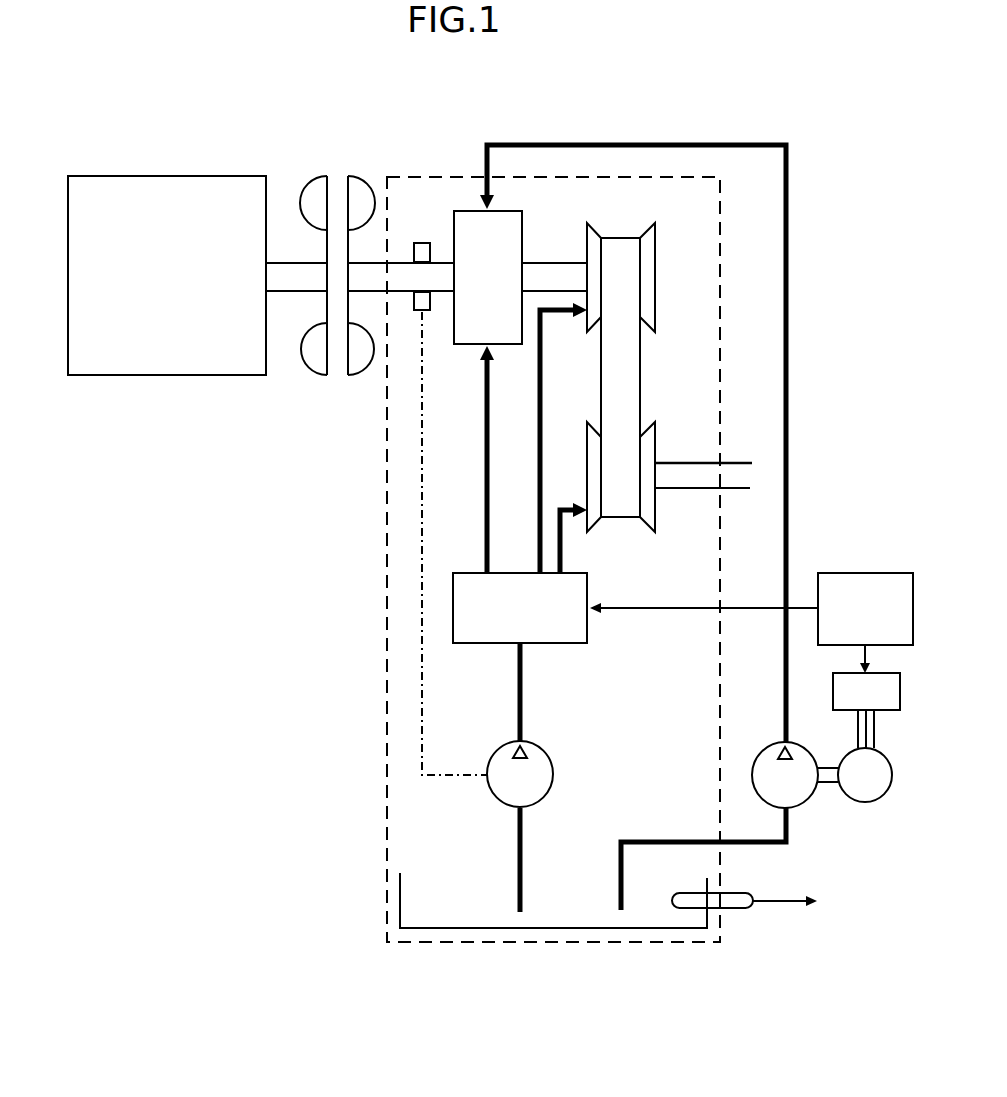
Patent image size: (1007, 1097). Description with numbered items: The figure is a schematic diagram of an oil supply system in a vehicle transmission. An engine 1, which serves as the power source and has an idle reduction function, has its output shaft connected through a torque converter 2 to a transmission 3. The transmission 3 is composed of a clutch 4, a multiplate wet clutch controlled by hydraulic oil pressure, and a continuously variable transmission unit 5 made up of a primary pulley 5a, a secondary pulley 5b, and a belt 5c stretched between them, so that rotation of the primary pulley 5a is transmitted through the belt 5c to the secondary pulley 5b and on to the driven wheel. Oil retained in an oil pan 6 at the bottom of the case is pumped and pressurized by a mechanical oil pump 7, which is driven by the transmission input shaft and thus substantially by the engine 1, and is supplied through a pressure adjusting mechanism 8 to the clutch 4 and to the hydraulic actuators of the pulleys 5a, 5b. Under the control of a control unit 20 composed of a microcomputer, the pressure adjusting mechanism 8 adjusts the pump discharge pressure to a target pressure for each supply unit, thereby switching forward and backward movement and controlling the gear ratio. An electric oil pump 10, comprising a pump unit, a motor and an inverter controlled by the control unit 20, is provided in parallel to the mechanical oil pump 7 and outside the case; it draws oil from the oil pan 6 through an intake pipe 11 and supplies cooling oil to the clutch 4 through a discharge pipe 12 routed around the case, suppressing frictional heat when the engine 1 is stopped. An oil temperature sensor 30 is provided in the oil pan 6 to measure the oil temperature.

The engine 1 is at (126, 176).
The torque converter 2 is at (337, 176).
The transmission 3 is at (418, 177).
The clutch 4 is at (516, 210).
The continuously variable transmission unit 5 is at (651, 320).
The primary pulley 5a is at (656, 278).
The secondary pulley 5b is at (657, 508).
The belt 5c is at (641, 373).
The oil pan 6 is at (387, 880).
The mechanical oil pump 7 is at (500, 805).
The pressure adjusting mechanism 8 is at (476, 645).
The electric oil pump 10 is at (752, 758).
The intake pipe 11 is at (795, 840).
The discharge pipe 12 is at (788, 337).
The control unit 20 is at (862, 571).
The oil temperature sensor 30 is at (748, 910).